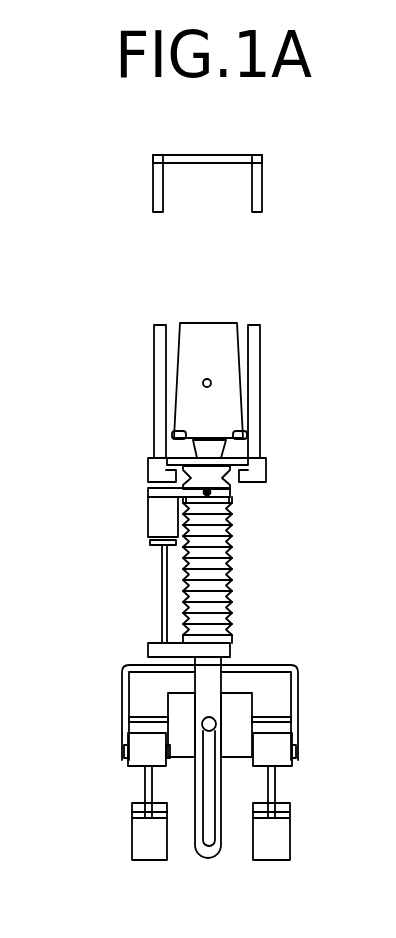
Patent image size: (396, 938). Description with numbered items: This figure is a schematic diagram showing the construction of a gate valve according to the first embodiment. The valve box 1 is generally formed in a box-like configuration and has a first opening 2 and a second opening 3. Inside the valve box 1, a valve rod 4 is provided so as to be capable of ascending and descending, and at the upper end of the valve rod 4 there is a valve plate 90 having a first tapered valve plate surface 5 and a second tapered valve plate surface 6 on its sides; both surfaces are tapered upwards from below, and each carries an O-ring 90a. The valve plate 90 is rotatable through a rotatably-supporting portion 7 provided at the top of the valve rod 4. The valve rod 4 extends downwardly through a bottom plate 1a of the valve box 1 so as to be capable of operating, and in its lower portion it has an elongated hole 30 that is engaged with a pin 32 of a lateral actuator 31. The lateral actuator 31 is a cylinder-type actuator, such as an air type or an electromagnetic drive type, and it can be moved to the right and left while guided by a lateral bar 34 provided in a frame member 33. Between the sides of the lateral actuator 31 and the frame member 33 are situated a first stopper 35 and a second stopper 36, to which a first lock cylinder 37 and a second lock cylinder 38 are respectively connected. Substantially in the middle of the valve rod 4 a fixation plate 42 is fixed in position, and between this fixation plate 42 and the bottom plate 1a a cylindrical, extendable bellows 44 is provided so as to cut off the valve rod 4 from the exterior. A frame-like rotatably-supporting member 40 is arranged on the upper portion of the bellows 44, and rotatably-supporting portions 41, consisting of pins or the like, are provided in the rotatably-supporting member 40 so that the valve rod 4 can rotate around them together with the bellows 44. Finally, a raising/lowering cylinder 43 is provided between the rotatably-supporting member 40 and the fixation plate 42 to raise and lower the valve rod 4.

The valve box 1 is at (257, 174).
The first opening 2 is at (155, 215).
The second opening 3 is at (257, 214).
The valve plate 90 is at (207, 330).
The O-ring 90a is at (178, 325).
The first tapered valve plate surface 5 is at (168, 347).
The second tapered valve plate surface 6 is at (240, 342).
The rotatably-supporting portion 7 is at (203, 383).
The valve rod 4 is at (180, 450).
The bottom plate 1a is at (243, 455).
The rotatably-supporting member 40 is at (232, 493).
The rotatably-supporting portions 41 is at (232, 515).
The raising/lowering cylinder 43 is at (148, 521).
The bellows 44 is at (232, 578).
The fixation plate 42 is at (232, 648).
The frame member 33 is at (280, 665).
The lateral actuator 31 is at (170, 697).
The lateral bar 34 is at (270, 718).
The pin 32 is at (202, 721).
The elongated hole 30 is at (208, 785).
The first stopper 35 is at (135, 747).
The second stopper 36 is at (285, 748).
The first lock cylinder 37 is at (145, 848).
The second lock cylinder 38 is at (285, 840).